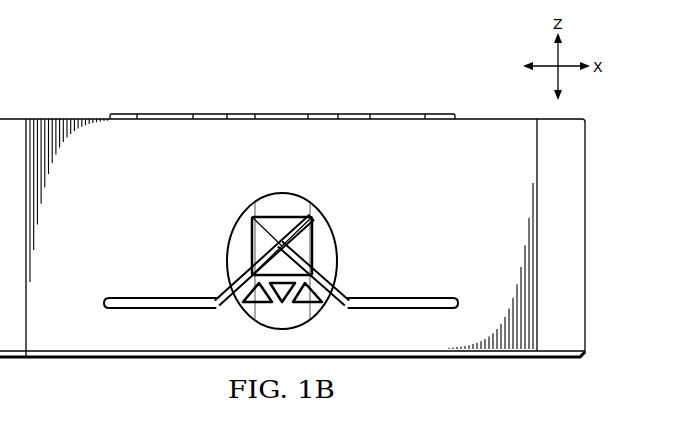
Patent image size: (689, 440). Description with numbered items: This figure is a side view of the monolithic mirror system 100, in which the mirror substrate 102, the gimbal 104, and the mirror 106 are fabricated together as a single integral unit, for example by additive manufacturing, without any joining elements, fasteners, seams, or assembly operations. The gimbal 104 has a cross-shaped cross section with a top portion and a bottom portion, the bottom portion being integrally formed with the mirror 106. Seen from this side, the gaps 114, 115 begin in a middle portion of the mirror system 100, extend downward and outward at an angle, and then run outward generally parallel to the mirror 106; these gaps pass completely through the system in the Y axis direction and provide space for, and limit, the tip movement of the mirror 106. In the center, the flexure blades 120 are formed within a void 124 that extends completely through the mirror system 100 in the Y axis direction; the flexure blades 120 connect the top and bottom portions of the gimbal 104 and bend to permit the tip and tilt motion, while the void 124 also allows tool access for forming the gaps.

The monolithic mirror system 100 is at (98, 69).
The mirror substrate 102 is at (587, 235).
The gimbal 104 is at (161, 109).
The mirror 106 is at (162, 358).
The gap 114 is at (132, 305).
The gap 115 is at (432, 305).
The flexure blades 120 is at (289, 217).
The void 124 is at (260, 242).